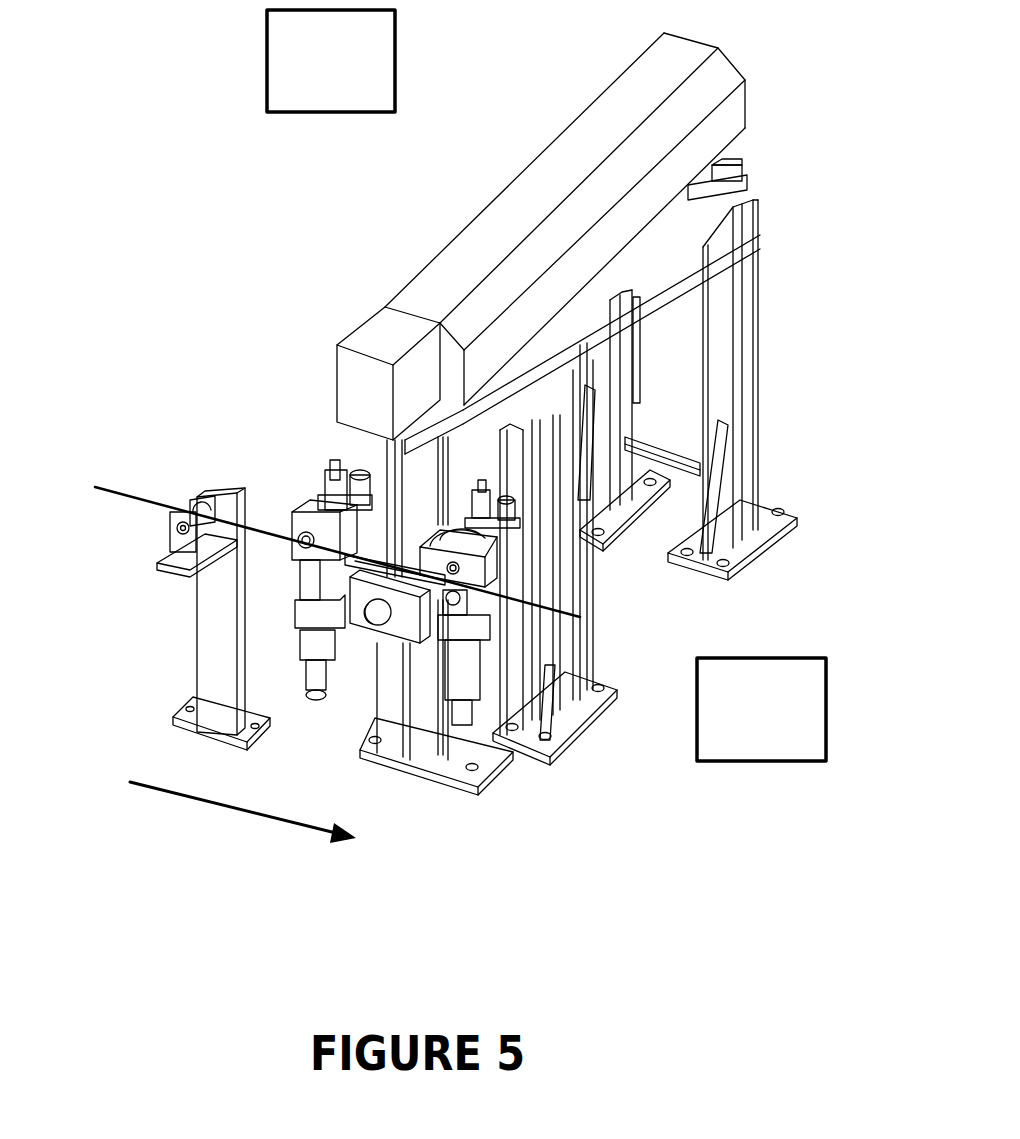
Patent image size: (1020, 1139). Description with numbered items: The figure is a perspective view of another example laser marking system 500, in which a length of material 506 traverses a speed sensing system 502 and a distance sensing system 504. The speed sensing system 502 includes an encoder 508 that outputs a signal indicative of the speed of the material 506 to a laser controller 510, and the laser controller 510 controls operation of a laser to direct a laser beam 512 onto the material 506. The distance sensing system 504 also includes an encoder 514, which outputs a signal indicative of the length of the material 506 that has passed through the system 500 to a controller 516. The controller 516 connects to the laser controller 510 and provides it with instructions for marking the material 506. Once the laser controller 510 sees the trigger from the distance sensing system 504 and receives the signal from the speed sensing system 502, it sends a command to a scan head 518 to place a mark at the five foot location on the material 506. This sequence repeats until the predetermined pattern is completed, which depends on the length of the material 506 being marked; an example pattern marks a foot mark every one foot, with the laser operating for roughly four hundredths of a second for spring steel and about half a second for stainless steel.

The laser marking system 500 is at (188, 70).
The speed sensing system 502 is at (272, 489).
The distance sensing system 504 is at (520, 584).
The length of material 506 is at (110, 492).
The encoder 508 is at (298, 455).
The laser controller 510 is at (331, 166).
The laser beam 512 is at (360, 450).
The encoder 514 is at (494, 482).
The controller 516 is at (670, 480).
The scan head 518 is at (345, 338).